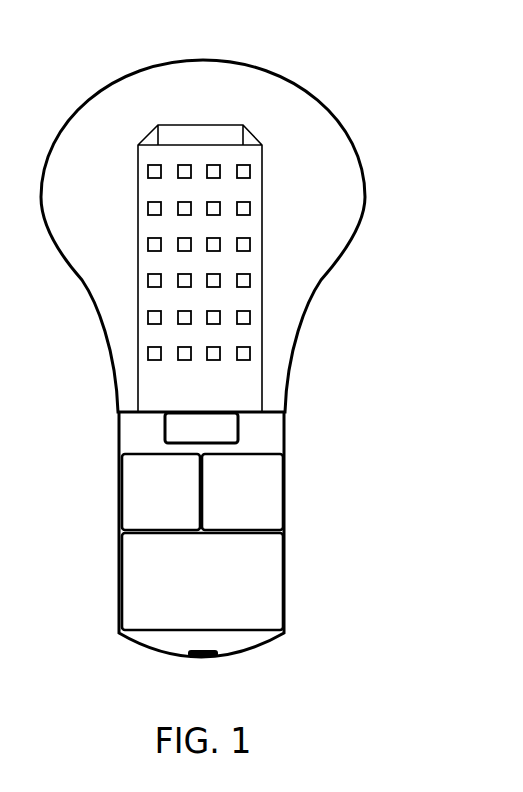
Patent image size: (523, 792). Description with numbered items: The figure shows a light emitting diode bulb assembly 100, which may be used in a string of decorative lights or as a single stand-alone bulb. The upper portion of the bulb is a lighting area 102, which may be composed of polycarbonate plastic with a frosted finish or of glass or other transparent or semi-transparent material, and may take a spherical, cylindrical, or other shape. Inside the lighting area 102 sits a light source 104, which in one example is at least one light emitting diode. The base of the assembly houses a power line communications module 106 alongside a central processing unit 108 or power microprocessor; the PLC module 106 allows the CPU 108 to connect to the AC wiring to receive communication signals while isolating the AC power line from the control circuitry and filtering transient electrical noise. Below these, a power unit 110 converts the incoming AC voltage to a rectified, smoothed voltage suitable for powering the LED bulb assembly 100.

The LED bulb assembly 100 is at (355, 98).
The lighting area 102 is at (177, 108).
The light source 104 is at (174, 403).
The power line communications module 106 is at (137, 504).
The central processing unit 108 is at (219, 504).
The power unit 110 is at (179, 595).